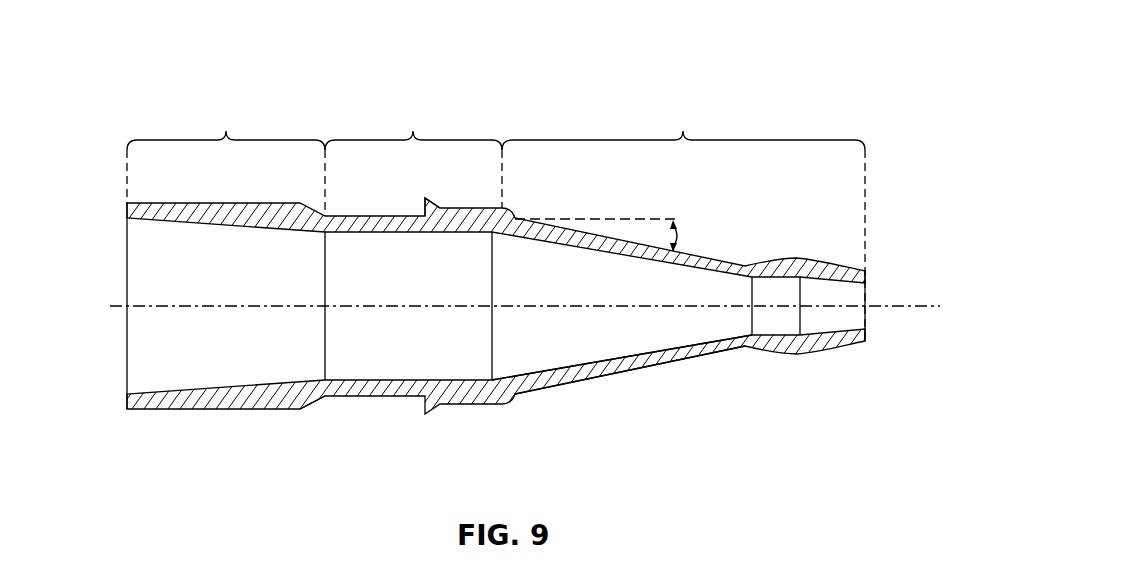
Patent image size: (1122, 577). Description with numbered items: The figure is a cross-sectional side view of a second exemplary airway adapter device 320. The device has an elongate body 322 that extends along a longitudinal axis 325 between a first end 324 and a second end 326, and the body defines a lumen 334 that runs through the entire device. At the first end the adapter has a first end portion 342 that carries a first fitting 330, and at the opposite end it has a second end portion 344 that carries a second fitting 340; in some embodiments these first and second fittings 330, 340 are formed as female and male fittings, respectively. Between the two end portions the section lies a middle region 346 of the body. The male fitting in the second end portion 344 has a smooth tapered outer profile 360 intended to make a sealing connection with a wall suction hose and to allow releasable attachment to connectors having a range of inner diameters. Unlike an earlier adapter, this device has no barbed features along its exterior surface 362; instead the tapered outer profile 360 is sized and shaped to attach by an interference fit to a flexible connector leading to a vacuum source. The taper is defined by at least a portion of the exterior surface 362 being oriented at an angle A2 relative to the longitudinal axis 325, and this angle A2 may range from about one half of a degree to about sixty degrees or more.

The airway adapter device 320 is at (836, 72).
The elongate body 322 is at (445, 232).
The first end 324 is at (127, 288).
The longitudinal axis 325 is at (940, 306).
The second end 326 is at (866, 320).
The first fitting 330 is at (309, 405).
The lumen 334 is at (385, 298).
The second fitting 340 is at (752, 262).
The first end portion 342 is at (226, 160).
The second end portion 344 is at (683, 225).
The intermediate section 346 is at (413, 156).
The tapered outer profile 360 is at (683, 361).
The exterior surface 362 is at (568, 384).
The angle A2 is at (681, 236).